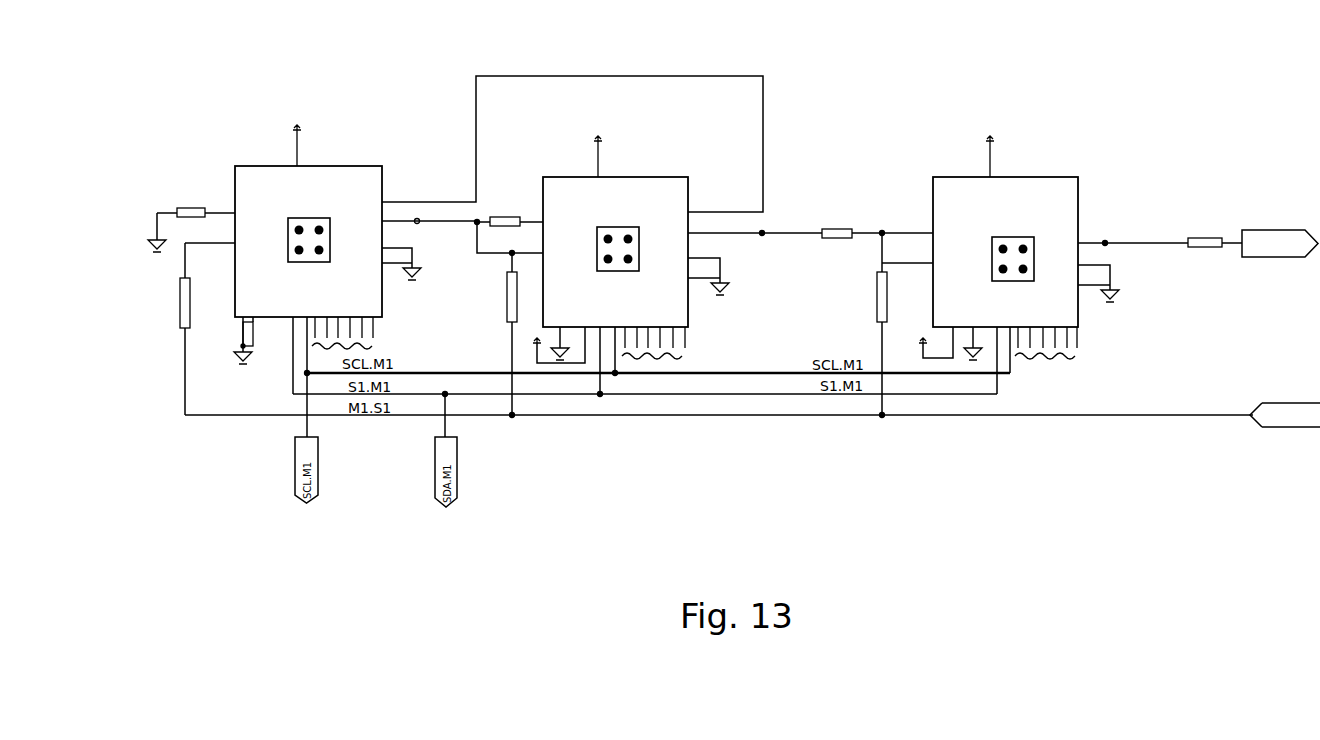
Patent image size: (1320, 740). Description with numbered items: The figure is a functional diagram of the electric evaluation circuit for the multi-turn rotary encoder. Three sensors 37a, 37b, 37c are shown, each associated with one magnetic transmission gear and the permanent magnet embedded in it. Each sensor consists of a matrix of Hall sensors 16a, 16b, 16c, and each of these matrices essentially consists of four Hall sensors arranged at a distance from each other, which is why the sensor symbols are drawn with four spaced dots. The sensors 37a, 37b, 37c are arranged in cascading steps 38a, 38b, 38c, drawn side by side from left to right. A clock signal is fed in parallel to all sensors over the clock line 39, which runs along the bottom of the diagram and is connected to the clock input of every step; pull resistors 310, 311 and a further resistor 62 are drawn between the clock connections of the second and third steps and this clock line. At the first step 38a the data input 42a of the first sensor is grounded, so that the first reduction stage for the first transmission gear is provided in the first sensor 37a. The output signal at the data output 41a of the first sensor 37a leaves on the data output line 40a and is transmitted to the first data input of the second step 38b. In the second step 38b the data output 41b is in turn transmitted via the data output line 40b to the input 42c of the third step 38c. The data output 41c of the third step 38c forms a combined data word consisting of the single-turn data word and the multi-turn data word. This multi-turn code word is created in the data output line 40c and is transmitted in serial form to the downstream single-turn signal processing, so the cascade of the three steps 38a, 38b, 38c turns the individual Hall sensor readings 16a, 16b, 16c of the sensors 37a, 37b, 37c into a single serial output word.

The first cascading step 38a is at (243, 118).
The second cascading step 38b is at (550, 160).
The third cascading step 38c is at (958, 138).
The first sensor 37a is at (320, 175).
The second sensor 37b is at (622, 188).
The third sensor 37c is at (1014, 192).
The Hall sensor matrix 16a is at (312, 217).
The Hall sensor matrix 16b is at (617, 228).
The Hall sensor matrix 16c is at (1012, 238).
The data output line 40a is at (417, 203).
The data output line 40b is at (763, 232).
The data output line 40c is at (1106, 241).
The data output 41a is at (397, 224).
The data output 41b is at (698, 236).
The data output 41c is at (1096, 245).
The data input 42a is at (233, 212).
The data input 42c is at (931, 232).
The clock line 39 is at (1204, 418).
The pull resistor of second driver clock input 310 is at (509, 319).
The pull resistor of third driver clock input 311 is at (895, 324).
The resistor 62 is at (680, 326).